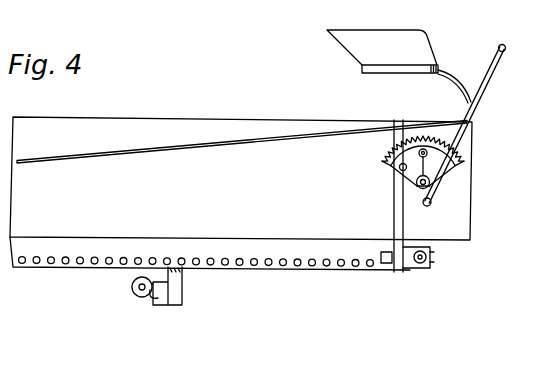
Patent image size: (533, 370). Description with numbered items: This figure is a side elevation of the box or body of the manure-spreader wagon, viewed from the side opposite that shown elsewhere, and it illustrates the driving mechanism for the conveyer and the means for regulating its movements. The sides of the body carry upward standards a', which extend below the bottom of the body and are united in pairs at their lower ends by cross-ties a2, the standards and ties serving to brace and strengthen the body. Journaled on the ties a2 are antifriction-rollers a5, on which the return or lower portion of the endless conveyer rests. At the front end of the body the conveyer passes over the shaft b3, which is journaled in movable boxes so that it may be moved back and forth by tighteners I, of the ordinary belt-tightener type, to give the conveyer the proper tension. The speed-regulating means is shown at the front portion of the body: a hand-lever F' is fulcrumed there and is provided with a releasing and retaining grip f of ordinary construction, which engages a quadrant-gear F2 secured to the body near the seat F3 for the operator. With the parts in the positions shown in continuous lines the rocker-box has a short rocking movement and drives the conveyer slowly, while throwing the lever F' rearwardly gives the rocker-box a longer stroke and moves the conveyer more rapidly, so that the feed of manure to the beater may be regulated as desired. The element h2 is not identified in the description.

The hand-lever F' is at (255, 144).
The quadrant-gear F2 is at (396, 165).
The seat F3 is at (399, 66).
The releasing and retaining grip f is at (490, 45).
The standard a' is at (285, 212).
The tightener I is at (380, 257).
The shaft b3 is at (431, 261).
The perforated rail h2 is at (339, 268).
The antifriction-roller a5 is at (132, 289).
The cross-tie a2 is at (157, 297).